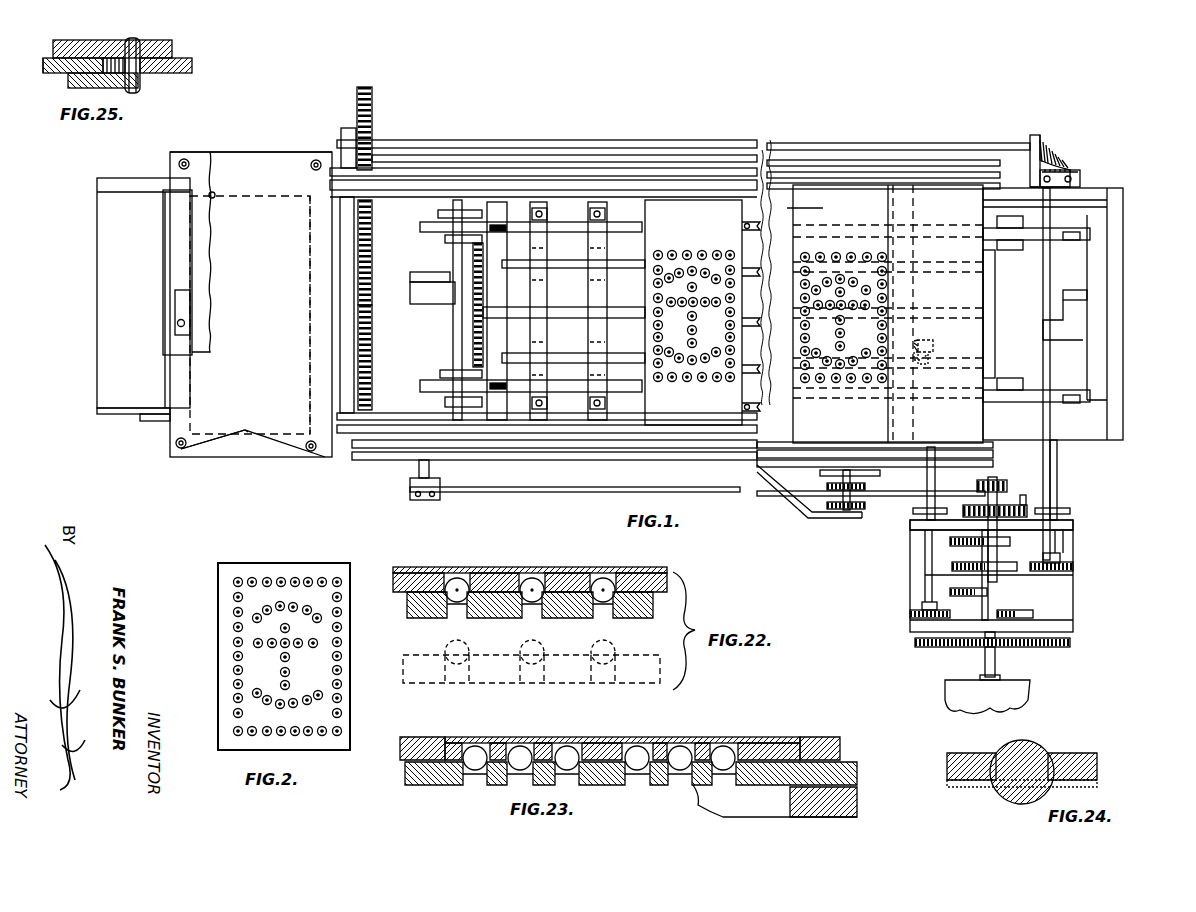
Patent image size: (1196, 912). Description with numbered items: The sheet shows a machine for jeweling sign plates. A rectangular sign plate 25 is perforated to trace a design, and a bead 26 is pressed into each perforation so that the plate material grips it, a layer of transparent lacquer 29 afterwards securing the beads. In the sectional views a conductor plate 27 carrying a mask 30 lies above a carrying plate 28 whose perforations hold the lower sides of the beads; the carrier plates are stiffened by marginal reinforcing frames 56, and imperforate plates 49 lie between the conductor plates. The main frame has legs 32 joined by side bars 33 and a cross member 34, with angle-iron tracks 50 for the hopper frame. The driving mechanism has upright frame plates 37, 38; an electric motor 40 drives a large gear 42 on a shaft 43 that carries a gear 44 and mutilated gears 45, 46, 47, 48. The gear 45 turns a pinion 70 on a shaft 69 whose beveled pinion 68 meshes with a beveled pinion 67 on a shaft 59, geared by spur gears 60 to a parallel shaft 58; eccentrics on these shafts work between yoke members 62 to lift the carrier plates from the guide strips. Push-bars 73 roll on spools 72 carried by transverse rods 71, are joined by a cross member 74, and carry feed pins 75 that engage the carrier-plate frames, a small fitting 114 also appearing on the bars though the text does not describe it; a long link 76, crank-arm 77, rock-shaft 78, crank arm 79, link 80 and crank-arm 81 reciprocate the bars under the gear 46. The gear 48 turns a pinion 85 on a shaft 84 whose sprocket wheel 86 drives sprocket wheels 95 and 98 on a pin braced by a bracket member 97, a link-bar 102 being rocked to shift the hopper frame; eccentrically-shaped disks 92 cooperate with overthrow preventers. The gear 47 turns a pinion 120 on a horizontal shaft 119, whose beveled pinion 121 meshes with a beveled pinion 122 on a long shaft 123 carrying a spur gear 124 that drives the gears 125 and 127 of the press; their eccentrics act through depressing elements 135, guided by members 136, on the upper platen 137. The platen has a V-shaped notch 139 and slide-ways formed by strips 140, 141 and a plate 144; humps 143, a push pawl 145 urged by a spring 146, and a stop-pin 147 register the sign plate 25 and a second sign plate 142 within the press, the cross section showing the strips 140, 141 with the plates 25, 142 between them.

In FIG. 25, the sign plate 25 is at (105, 42).
In FIG. 2, the sign plate 25 is at (220, 573).
In FIG. 24, the sign plate 25 is at (960, 764).
In FIG. 2, the bead 26 is at (294, 578).
In FIG. 22, the bead 26 is at (538, 585).
In FIG. 23, the bead 26 is at (723, 752).
In FIG. 24, the bead 26 is at (1045, 757).
In FIG. 1, the conductor plate 27 is at (853, 198).
In FIG. 22, the conductor plate 27 is at (484, 578).
In FIG. 23, the conductor plate 27 is at (612, 752).
In FIG. 1, the carrying plate 28 is at (718, 205).
In FIG. 22, the carrying plate 28 is at (415, 618).
In FIG. 23, the carrying plate 28 is at (448, 780).
In FIG. 24, the layer of transparent lacquer 29 is at (962, 784).
In FIG. 22, the mask 30 is at (642, 570).
In FIG. 23, the mask 30 is at (458, 742).
In FIG. 1, the upright leg 32 is at (505, 175).
In FIG. 1, the side bar 33 is at (128, 420).
In FIG. 1, the cross member 34 is at (1112, 372).
In FIG. 1, the frame plate 37 is at (912, 625).
In FIG. 1, the frame plate 38 is at (1073, 524).
In FIG. 1, the electric motor 40 is at (945, 695).
In FIG. 1, the large gear 42 is at (940, 648).
In FIG. 1, the shaft 43 is at (997, 500).
In FIG. 1, the gear 44 is at (980, 490).
In FIG. 1, the mutilated gear 45 is at (1035, 614).
In FIG. 1, the mutilated gear 46 is at (990, 592).
In FIG. 1, the mutilated gear 47 is at (1020, 568).
In FIG. 1, the mutilated gear 48 is at (1010, 543).
In FIG. 1, the imperforate plate 49 is at (818, 210).
In FIG. 23, the imperforate plate 49 is at (415, 742).
In FIG. 1, the angle-iron track 50 is at (603, 162).
In FIG. 23, the marginal reinforcing frame 56 is at (858, 808).
In FIG. 1, the shaft 58 is at (632, 263).
In FIG. 1, the shaft 59 is at (622, 362).
In FIG. 1, the spur gear 60 is at (475, 330).
In FIG. 1, the yoke member 62 is at (595, 334).
In FIG. 1, the beveled pinion 67 is at (933, 346).
In FIG. 1, the beveled pinion 68 is at (930, 362).
In FIG. 1, the shaft 69 is at (925, 480).
In FIG. 1, the pinion 70 is at (912, 614).
In FIG. 1, the rod 71 is at (455, 256).
In FIG. 1, the spool 72 is at (440, 240).
In FIG. 1, the push-bar 73 is at (428, 228).
In FIG. 1, the cross member 74 is at (1090, 275).
In FIG. 1, the feed pin 75 is at (745, 228).
In FIG. 1, the long link 76 is at (566, 314).
In FIG. 1, the crank-arm 77 is at (472, 290).
In FIG. 1, the rock-shaft 78 is at (430, 470).
In FIG. 1, the crank arm 79 is at (440, 492).
In FIG. 1, the link 80 is at (548, 492).
In FIG. 1, the crank-arm 81 is at (1032, 502).
In FIG. 1, the shaft 84 is at (945, 570).
In FIG. 1, the pinion 85 is at (960, 541).
In FIG. 1, the sprocket wheel 86 is at (950, 522).
In FIG. 1, the eccentrically-shaped disk 92 is at (1030, 512).
In FIG. 1, the sprocket wheel 95 is at (840, 507).
In FIG. 1, the bracket member 97 is at (765, 478).
In FIG. 1, the sprocket wheel 98 is at (790, 496).
In FIG. 1, the link-bar 102 is at (830, 486).
In FIG. 1, the clip 114 is at (505, 228).
In FIG. 1, the horizontal shaft 119 is at (1053, 382).
In FIG. 1, the pinion 120 is at (1073, 567).
In FIG. 1, the beveled pinion 121 is at (1068, 167).
In FIG. 1, the beveled pinion 122 is at (1052, 140).
In FIG. 1, the long shaft 123 is at (957, 145).
In FIG. 1, the spur gear 124 is at (372, 108).
In FIG. 1, the gear 125 is at (358, 220).
In FIG. 1, the gear 127 is at (358, 362).
In FIG. 1, the depressing element 135 is at (176, 447).
In FIG. 1, the guide member 136 is at (170, 158).
In FIG. 25, the upper platen 137 is at (172, 58).
In FIG. 1, the upper platen 137 is at (285, 160).
In FIG. 1, the V-shaped notch 139 is at (245, 430).
In FIG. 25, the strip 140 is at (192, 65).
In FIG. 1, the strip 140 is at (335, 268).
In FIG. 25, the strip 141 is at (138, 88).
In FIG. 25, the second sign plate 142 is at (45, 62).
In FIG. 1, the second sign plate 142 is at (195, 262).
In FIG. 25, the hump 143 is at (142, 42).
In FIG. 1, the hump 143 is at (250, 315).
In FIG. 1, the plate 144 is at (176, 272).
In FIG. 1, the push pawl 145 is at (176, 329).
In FIG. 1, the spring 146 is at (178, 305).
In FIG. 1, the stop-pin 147 is at (216, 195).